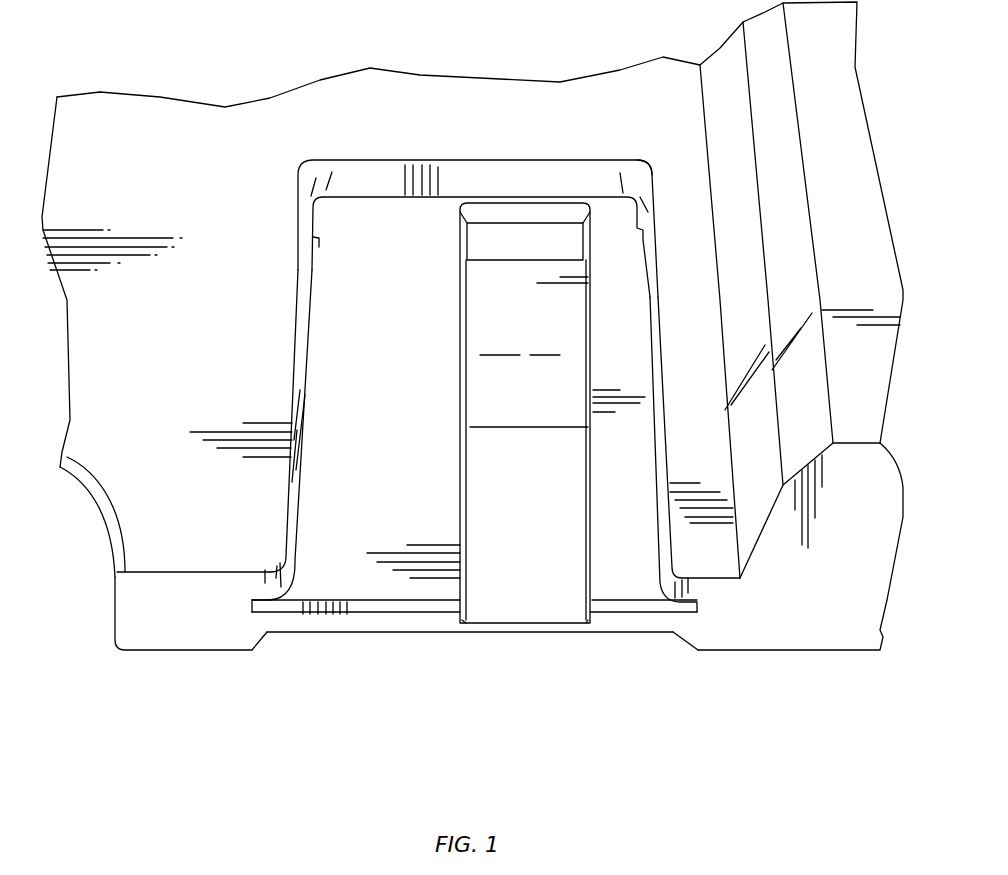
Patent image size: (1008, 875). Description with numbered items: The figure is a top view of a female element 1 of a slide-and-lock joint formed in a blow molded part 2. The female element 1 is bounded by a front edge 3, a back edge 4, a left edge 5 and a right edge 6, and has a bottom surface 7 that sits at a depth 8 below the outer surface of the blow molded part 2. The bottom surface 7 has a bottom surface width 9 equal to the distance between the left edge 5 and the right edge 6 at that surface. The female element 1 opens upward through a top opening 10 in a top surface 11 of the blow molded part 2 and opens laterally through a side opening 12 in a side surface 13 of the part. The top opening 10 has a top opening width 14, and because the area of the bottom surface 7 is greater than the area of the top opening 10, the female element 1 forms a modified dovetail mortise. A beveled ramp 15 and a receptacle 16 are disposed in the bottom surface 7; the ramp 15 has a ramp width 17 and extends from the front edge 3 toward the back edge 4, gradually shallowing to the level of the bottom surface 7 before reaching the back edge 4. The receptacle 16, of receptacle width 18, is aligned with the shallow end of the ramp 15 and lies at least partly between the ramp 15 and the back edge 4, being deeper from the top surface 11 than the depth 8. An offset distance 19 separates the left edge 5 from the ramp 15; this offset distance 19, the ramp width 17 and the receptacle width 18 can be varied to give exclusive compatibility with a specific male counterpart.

The female element 1 is at (277, 213).
The blow molded part 2 is at (163, 150).
The front edge 3 is at (383, 618).
The back edge 4 is at (443, 162).
The left edge 5 is at (293, 363).
The right edge 6 is at (663, 393).
The bottom surface 7 is at (370, 236).
The depth 8 is at (218, 520).
The bottom surface width 9 is at (253, 613).
The top opening 10 is at (651, 176).
The top surface 11 is at (153, 490).
The side opening 12 is at (680, 633).
The side surface 13 is at (143, 618).
The top opening width 14 is at (658, 298).
The ramp 15 is at (523, 582).
The receptacle 16 is at (493, 233).
The ramp width 17 is at (590, 490).
The receptacle width 18 is at (582, 240).
The offset distance 19 is at (457, 620).